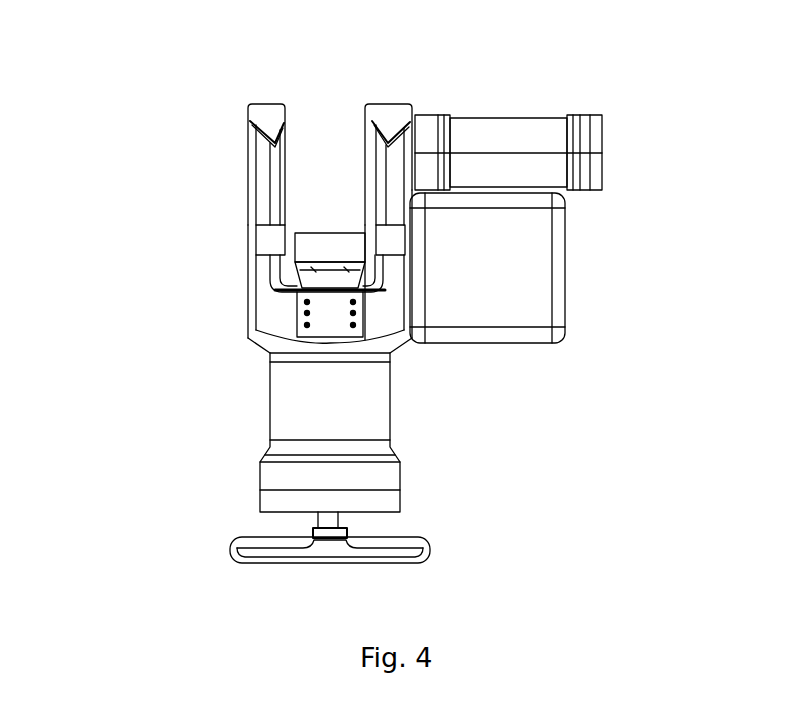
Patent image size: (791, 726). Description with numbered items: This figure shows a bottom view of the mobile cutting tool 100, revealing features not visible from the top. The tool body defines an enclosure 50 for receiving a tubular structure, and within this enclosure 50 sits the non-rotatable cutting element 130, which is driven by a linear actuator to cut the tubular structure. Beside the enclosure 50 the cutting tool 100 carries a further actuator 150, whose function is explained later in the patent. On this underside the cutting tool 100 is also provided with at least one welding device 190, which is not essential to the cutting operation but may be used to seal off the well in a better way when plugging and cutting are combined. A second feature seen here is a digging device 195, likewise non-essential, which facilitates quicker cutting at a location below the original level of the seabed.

The mobile cutting tool 100 is at (99, 151).
The enclosure 50 is at (313, 186).
The digging device 195 is at (262, 113).
The welding device 190 is at (265, 243).
The cutting element 130 is at (326, 242).
The further actuator 150 is at (528, 142).